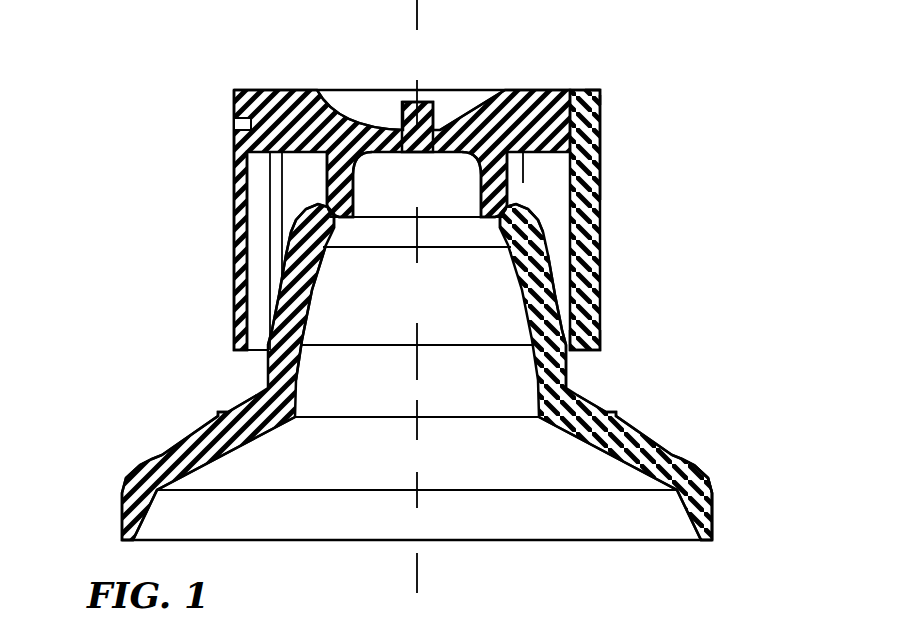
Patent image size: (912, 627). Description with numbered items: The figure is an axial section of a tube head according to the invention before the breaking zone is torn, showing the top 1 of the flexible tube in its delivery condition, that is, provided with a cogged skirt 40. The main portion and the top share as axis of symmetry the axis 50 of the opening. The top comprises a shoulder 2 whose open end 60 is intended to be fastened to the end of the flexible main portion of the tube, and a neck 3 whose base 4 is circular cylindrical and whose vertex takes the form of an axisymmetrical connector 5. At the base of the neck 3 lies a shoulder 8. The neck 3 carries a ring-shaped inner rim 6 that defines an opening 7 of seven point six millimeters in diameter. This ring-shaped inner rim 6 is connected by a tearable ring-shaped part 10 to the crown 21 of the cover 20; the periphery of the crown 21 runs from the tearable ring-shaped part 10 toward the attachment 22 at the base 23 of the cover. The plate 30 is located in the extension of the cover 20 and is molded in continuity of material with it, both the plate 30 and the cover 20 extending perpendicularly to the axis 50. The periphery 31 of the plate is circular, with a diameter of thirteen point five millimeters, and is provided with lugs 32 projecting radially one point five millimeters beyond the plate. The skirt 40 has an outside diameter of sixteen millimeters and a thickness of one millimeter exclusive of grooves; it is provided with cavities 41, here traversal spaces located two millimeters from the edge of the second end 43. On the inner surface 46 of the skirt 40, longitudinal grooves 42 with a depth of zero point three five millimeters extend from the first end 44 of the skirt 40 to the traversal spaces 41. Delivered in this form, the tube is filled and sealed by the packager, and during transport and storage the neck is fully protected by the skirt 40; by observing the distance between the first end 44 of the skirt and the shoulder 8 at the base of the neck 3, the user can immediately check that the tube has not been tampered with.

The top of the flexible tube 1 is at (420, 296).
The shoulder 2 is at (391, 478).
The neck 3 is at (626, 359).
The base of the neck 4 is at (420, 351).
The axisymmetrical connector 5 is at (232, 306).
The ring-shaped inner rim 6 is at (571, 205).
The opening 7 is at (391, 210).
The shoulder at the base of the neck 8 is at (395, 425).
The tearable ring-shaped part 10 is at (236, 197).
The cover 20 is at (405, 183).
The crown of the cover 21 is at (506, 174).
The attachment 22 is at (465, 73).
The base of the cover 23 is at (460, 88).
The plate 30 is at (378, 191).
The periphery of the plate 31 is at (652, 135).
The lugs 32 is at (197, 113).
The skirt 40 is at (646, 220).
The cavities 41 is at (161, 103).
The longitudinal grooves 42 is at (185, 251).
The second end of the skirt 43 is at (600, 90).
The first end of the skirt 44 is at (633, 330).
The inner surface of the skirt 46 is at (627, 289).
The axis of the opening 50 is at (417, 573).
The open end of the shoulder 60 is at (732, 502).